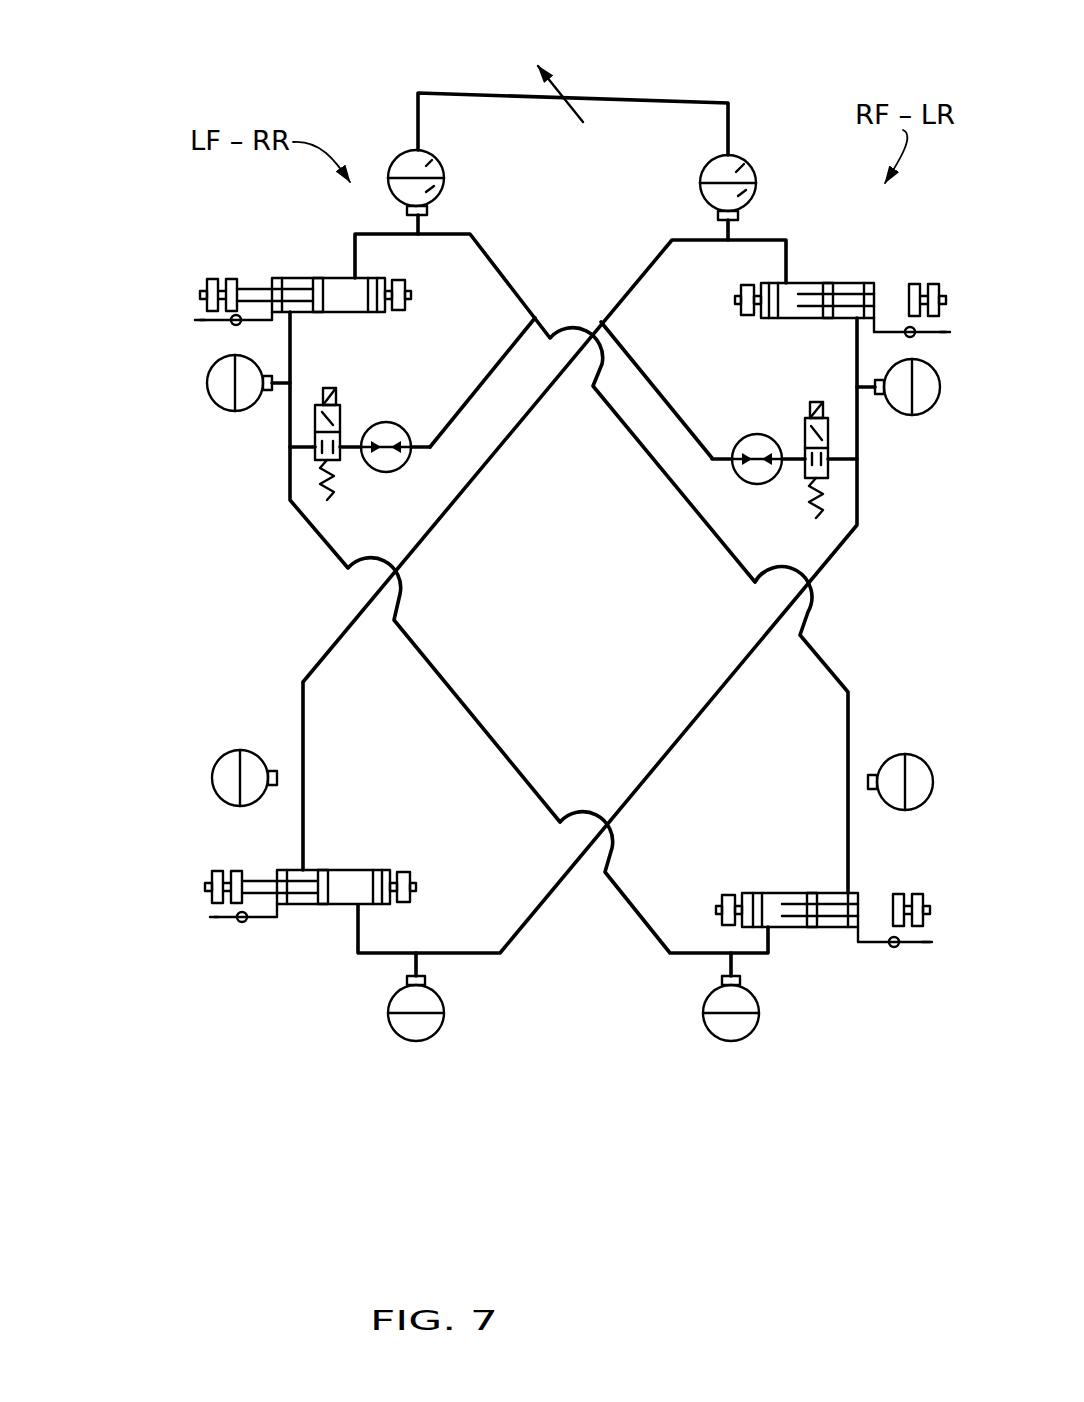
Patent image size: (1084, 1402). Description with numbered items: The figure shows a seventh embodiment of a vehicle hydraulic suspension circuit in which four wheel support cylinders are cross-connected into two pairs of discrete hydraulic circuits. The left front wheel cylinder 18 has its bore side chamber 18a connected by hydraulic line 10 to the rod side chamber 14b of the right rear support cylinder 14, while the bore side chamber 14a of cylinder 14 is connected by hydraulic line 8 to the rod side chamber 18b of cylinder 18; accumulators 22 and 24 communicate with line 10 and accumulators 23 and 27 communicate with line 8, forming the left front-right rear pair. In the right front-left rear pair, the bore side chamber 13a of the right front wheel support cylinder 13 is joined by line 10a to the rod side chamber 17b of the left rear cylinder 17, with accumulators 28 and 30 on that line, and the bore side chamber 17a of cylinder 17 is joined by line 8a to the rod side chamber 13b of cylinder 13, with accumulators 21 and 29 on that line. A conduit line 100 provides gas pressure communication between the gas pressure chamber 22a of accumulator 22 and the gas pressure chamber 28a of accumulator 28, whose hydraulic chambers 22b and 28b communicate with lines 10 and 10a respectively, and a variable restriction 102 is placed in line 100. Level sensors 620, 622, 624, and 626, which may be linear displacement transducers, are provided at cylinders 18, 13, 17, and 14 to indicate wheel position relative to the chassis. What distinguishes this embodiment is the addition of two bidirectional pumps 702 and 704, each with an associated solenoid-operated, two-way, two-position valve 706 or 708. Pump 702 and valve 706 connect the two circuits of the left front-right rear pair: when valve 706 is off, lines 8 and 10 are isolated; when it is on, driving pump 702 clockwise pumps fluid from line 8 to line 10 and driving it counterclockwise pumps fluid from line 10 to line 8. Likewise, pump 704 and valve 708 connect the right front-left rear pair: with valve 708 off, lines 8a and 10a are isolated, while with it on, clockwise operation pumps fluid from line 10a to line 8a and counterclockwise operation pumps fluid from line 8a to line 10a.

The hydraulic line 8 is at (290, 462).
The hydraulic line 8a is at (860, 462).
The hydraulic line 10 is at (506, 280).
The hydraulic line 10a is at (622, 297).
The right front wheel support cylinder 13 is at (840, 280).
The bore side chamber 13a is at (812, 283).
The rod side chamber 13b is at (860, 283).
The right rear support cylinder 14 is at (823, 897).
The bore side chamber 14a is at (775, 893).
The rod side chamber 14b is at (850, 893).
The left rear wheel support cylinder 17 is at (310, 886).
The bore side chamber 17a is at (350, 870).
The rod side chamber 17b is at (288, 870).
The left front wheel cylinder 18 is at (305, 280).
The bore side chamber 18a is at (340, 277).
The rod side chamber 18b is at (292, 276).
The accumulator 21 is at (390, 1037).
The accumulator 22 is at (433, 147).
The gas pressure chamber 22a is at (428, 166).
The hydraulic chamber 22b is at (428, 192).
The accumulator 23 is at (212, 368).
The accumulator 24 is at (920, 757).
The accumulator 27 is at (755, 1037).
The accumulator 28 is at (779, 157).
The gas pressure chamber 28a is at (738, 172).
The hydraulic chamber 28b is at (745, 192).
The accumulator 29 is at (930, 409).
The accumulator 30 is at (221, 799).
The conduit line 100 is at (654, 100).
The variable restriction 102 is at (556, 82).
The level sensor 620 is at (198, 306).
The level sensor 622 is at (950, 327).
The level sensor 624 is at (218, 922).
The level sensor 626 is at (915, 948).
The bidirectional pump 702 is at (387, 421).
The bidirectional pump 704 is at (758, 433).
The solenoid-operated two-way two-position valve 706 is at (336, 459).
The solenoid-operated two-way two-position valve 708 is at (801, 470).